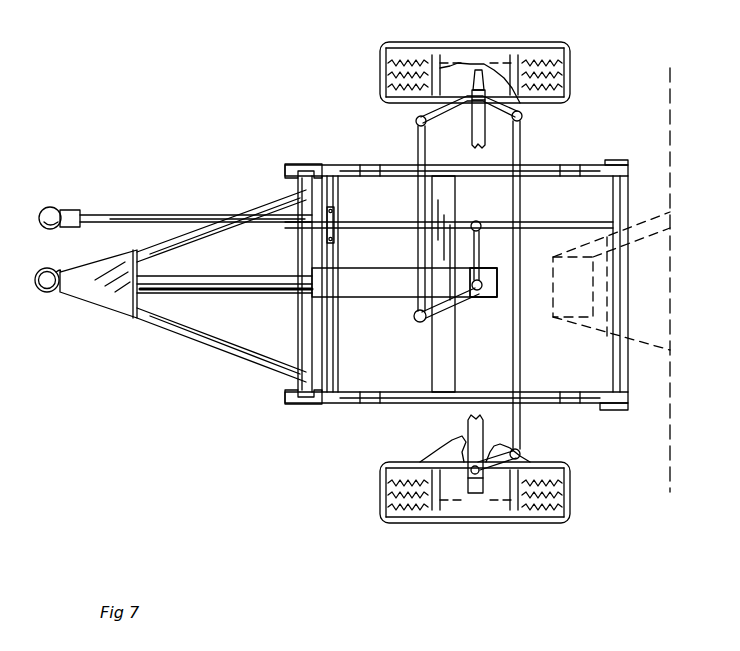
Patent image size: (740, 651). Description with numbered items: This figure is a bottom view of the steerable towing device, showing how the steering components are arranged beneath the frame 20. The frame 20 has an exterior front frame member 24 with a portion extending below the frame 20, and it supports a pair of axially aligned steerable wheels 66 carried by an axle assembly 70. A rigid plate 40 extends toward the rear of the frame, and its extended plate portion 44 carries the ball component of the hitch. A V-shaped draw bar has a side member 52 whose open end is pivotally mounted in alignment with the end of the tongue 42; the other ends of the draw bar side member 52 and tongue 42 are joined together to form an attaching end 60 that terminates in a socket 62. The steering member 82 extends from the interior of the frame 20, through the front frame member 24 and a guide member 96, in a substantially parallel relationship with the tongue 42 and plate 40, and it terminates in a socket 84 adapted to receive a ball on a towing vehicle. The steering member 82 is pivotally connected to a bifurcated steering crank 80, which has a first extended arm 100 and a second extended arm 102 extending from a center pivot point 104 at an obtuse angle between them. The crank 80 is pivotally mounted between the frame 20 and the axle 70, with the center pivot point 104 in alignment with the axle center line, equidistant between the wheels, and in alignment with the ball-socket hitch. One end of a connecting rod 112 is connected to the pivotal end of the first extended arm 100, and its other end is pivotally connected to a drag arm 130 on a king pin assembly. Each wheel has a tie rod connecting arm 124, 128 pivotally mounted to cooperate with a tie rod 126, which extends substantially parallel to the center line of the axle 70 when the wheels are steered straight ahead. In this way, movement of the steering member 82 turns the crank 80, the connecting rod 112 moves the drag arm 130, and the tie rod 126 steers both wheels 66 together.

The frame 20 is at (614, 418).
The front frame member 24 is at (443, 190).
The rigid plate 40 is at (386, 280).
The tongue 42 is at (168, 295).
The extended plate portion 44 is at (488, 290).
The draw bar side member 52 is at (260, 200).
The attaching end 60 is at (97, 300).
The socket 62 is at (53, 293).
The steerable wheel 66 is at (560, 525).
The axle assembly 70 is at (468, 440).
The bifurcated steering crank 80 is at (498, 260).
The steering member 82 is at (148, 214).
The socket 84 is at (51, 206).
The guide member 96 is at (336, 214).
The first extended arm 100 is at (425, 325).
The second extended arm 102 is at (482, 246).
The center pivot point 104 is at (477, 292).
The connecting rod 112 is at (442, 186).
The tie rod connecting arm 124 is at (514, 446).
The tie rod 126 is at (530, 140).
The tie rod connecting arm 128 is at (522, 110).
The drag arm 130 is at (414, 118).